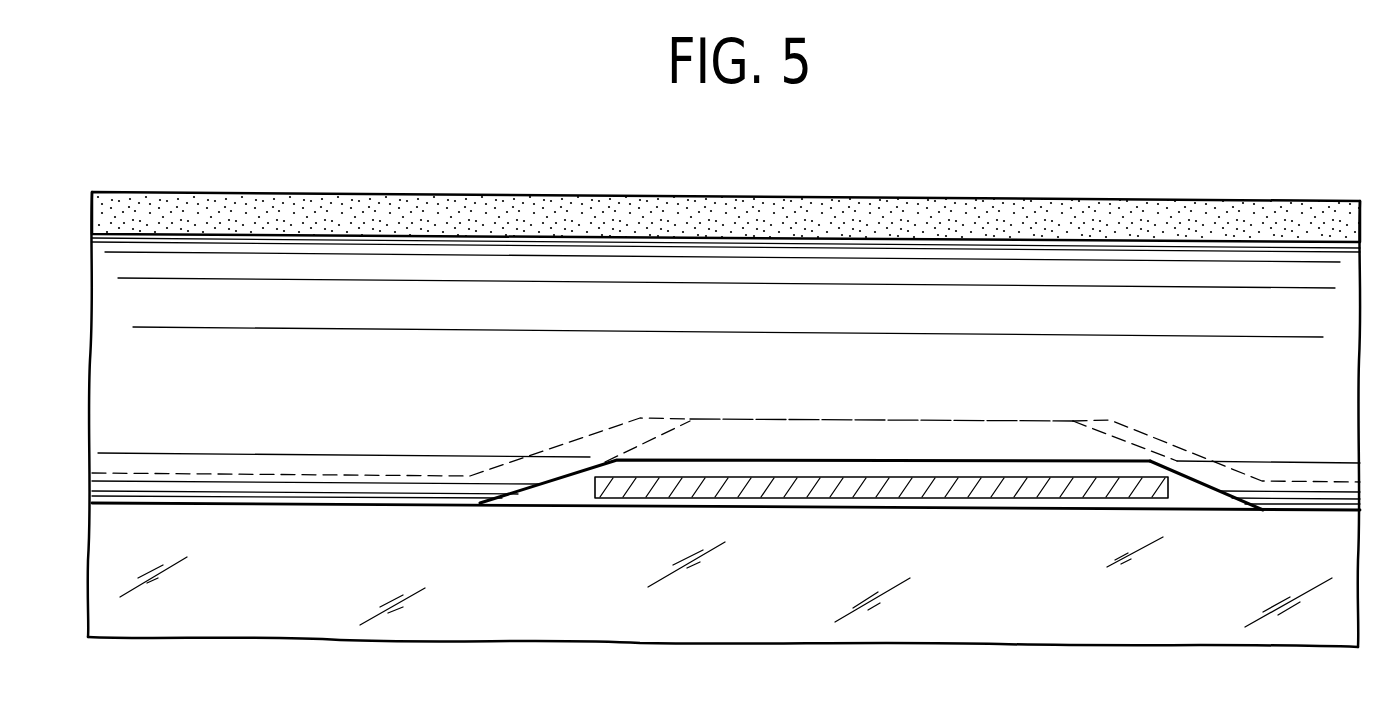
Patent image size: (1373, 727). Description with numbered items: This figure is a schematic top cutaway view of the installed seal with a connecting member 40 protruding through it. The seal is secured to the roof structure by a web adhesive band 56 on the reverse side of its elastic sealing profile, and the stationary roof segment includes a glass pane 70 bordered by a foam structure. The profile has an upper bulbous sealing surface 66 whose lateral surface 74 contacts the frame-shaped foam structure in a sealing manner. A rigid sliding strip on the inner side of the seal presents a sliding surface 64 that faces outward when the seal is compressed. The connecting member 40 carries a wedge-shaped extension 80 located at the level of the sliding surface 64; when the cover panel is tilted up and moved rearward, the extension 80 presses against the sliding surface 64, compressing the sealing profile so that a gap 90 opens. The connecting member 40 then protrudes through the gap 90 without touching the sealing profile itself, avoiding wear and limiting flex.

The web adhesive band 56 is at (845, 215).
The extension 80 is at (1032, 473).
The sliding surface 64 is at (388, 475).
The upper bulbous sealing surface 66 is at (265, 507).
The gap 90 is at (582, 493).
The connecting member 40 is at (1037, 490).
The lateral surface 74 is at (1197, 506).
The glass pane 70 is at (738, 613).